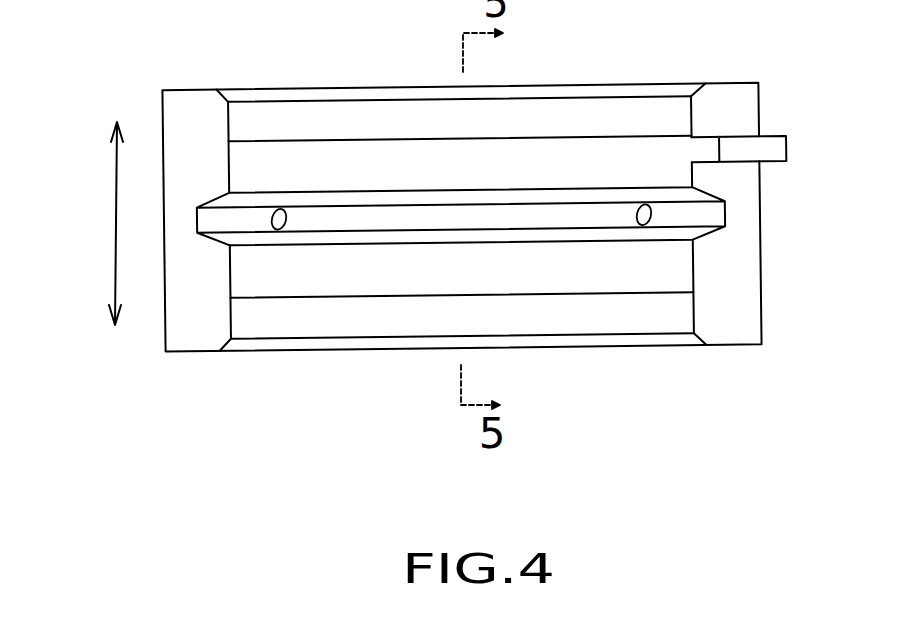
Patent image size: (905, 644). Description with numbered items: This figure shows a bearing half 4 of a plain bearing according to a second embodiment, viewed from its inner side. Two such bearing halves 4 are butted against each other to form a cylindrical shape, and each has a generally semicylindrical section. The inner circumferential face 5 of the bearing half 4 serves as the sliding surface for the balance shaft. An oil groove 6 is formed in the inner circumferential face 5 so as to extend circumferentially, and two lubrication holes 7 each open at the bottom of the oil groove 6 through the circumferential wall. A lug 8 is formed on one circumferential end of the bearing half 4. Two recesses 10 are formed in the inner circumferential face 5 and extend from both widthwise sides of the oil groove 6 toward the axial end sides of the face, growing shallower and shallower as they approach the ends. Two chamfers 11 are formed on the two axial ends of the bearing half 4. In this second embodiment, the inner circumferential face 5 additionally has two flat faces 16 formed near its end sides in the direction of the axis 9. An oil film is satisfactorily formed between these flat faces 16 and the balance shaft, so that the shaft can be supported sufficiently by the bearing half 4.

The bearing half 4 is at (595, 87).
The inner circumferential face 5 is at (642, 143).
The oil groove 6 is at (492, 213).
The lubrication hole 7 is at (281, 222).
The lug 8 is at (778, 149).
The axis 9 is at (116, 213).
The recess 10 is at (342, 157).
The chamfer 11 is at (285, 97).
The flat face 16 is at (408, 110).